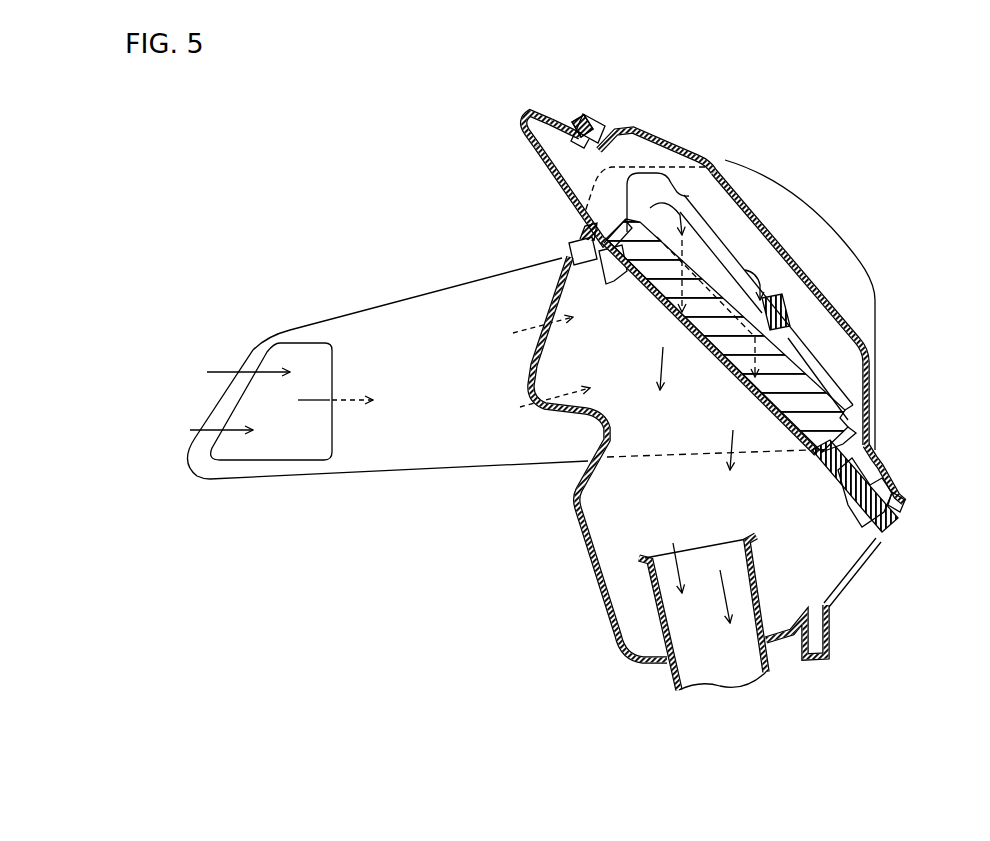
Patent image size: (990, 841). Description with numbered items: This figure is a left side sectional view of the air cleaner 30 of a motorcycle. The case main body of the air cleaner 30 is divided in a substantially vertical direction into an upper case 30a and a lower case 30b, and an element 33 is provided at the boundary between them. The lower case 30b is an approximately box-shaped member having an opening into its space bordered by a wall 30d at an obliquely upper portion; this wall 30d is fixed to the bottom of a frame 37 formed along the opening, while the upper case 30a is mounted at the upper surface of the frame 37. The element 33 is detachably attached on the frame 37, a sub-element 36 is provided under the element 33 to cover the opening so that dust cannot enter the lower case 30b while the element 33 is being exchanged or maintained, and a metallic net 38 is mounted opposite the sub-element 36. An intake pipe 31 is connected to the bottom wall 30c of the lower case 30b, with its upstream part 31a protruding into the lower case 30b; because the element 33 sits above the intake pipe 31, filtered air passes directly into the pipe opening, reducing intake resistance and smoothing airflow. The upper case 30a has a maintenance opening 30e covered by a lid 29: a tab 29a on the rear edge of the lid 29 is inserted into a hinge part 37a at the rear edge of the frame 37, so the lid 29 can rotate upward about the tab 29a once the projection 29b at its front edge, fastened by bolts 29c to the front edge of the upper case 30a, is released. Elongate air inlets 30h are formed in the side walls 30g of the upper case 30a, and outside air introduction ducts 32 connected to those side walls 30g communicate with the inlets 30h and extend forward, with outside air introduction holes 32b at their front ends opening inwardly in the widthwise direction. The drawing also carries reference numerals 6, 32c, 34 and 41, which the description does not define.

The air cleaner 6 is at (357, 185).
The lid 29 is at (640, 131).
The tab 29a is at (898, 510).
The projection 29b is at (578, 117).
The bolts 29c is at (593, 118).
The air cleaner 30 is at (527, 100).
The upper case 30a is at (516, 118).
The lower case 30b is at (514, 367).
The bottom wall 30c is at (787, 640).
The wall 30d is at (870, 538).
The maintenance opening 30e is at (592, 160).
The side walls 30g is at (680, 177).
The air inlets 30h is at (689, 196).
The intake pipe 31 is at (667, 678).
The upstream part 31a is at (757, 583).
The outside air introduction ducts 32 is at (377, 308).
The outside air introduction holes 32b is at (292, 458).
The lower wall of inlet duct 32c is at (483, 463).
The element 33 is at (818, 378).
The filter holder frame 34 is at (820, 347).
The sub-element 36 is at (713, 340).
The frame 37 is at (878, 485).
The hinge part 37a is at (902, 497).
The metallic net 38 is at (697, 340).
The clamp member 41 is at (568, 271).